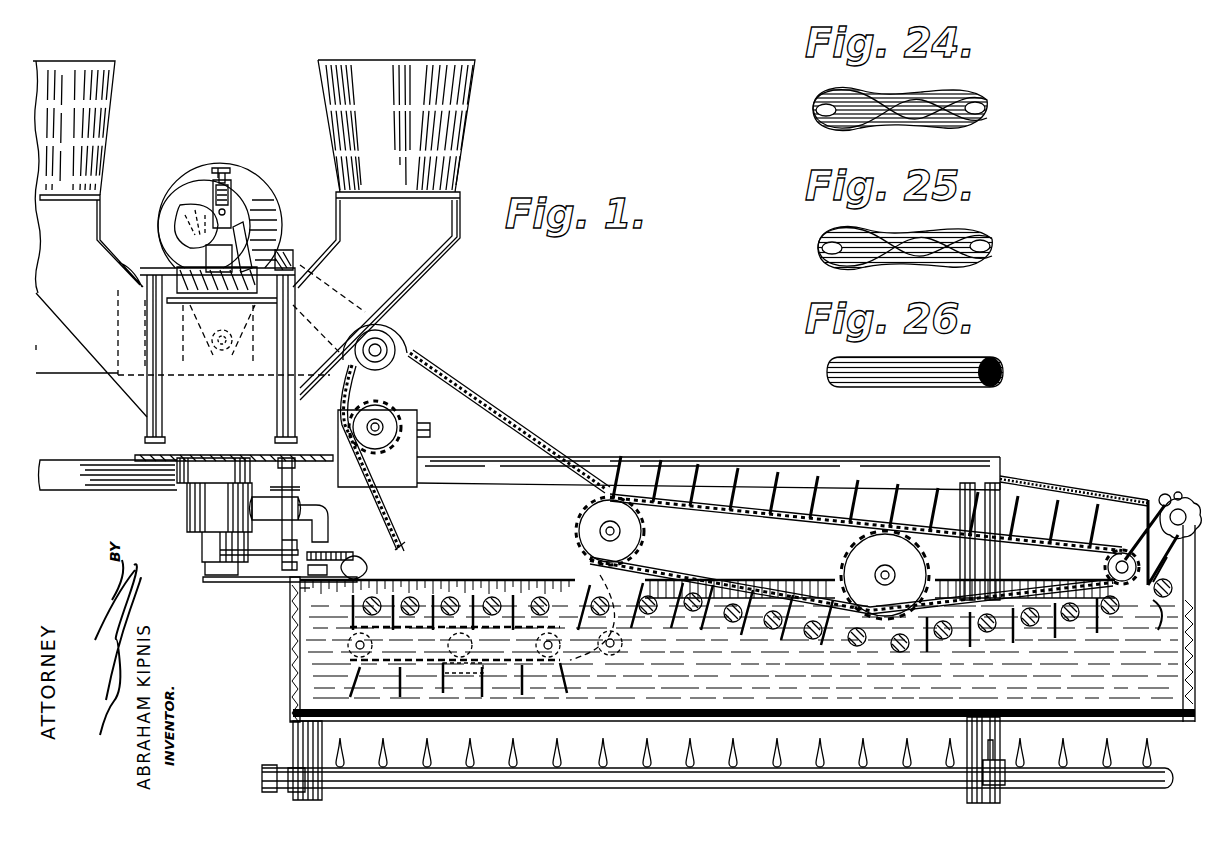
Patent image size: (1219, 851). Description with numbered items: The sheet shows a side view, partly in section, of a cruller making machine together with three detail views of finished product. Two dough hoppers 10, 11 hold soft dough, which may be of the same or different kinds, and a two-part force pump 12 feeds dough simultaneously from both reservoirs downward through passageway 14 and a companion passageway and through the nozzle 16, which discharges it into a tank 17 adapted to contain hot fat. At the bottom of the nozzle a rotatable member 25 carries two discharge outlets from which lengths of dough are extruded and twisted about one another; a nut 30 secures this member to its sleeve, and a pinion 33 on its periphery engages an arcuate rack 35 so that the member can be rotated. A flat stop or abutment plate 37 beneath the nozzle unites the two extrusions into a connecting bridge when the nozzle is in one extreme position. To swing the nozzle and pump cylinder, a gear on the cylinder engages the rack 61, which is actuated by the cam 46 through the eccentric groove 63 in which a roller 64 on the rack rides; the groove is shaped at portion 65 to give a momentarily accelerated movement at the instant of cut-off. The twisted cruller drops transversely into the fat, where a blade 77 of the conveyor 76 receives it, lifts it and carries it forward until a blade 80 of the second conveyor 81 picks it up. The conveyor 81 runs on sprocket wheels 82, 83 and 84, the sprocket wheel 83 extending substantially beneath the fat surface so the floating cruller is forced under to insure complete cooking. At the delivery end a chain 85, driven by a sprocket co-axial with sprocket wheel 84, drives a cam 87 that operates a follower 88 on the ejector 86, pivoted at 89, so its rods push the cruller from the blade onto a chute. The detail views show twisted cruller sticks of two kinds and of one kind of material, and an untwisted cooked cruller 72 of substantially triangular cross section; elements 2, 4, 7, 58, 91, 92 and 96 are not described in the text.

In FIG. 1, the section line 2- 2 is at (1203, 795).
In FIG. 1, the section line 4- 4 is at (218, 795).
In FIG. 1, the section line 7- 7 is at (448, 538).
In FIG. 1, the dough hopper 10 is at (97, 360).
In FIG. 1, the dough hopper 11 is at (400, 278).
In FIG. 1, the two-part force pump 12 is at (280, 182).
In FIG. 1, the passageway 14 is at (500, 740).
In FIG. 1, the nozzle 16 is at (245, 552).
In FIG. 1, the tank 17 is at (290, 642).
In FIG. 1, the rotatable member 25 is at (290, 590).
In FIG. 1, the nut 30 is at (334, 535).
In FIG. 1, the pinion 33 is at (340, 555).
In FIG. 1, the arcuate rack 35 is at (352, 566).
In FIG. 1, the stop or abutment plate 37 is at (400, 550).
In FIG. 1, the cam 46 is at (198, 166).
In FIG. 1, the adjusting bolt 58 is at (224, 172).
In FIG. 1, the rack 61 is at (276, 244).
In FIG. 1, the eccentric groove 63 is at (183, 182).
In FIG. 1, the roller 64 is at (238, 210).
In FIG. 1, the accelerated portion of cam groove 65 is at (162, 221).
In FIG. 26, the cruller 72 is at (898, 386).
In FIG. 1, the conveyor 76 is at (290, 612).
In FIG. 1, the blade 77 is at (400, 665).
In FIG. 1, the blade 80 is at (577, 525).
In FIG. 1, the second conveyor 81 is at (765, 482).
In FIG. 1, the sprocket wheel 82 is at (641, 531).
In FIG. 1, the sprocket wheel 83 is at (842, 558).
In FIG. 1, the sprocket wheel 84 is at (1104, 565).
In FIG. 1, the chain 85 is at (1140, 500).
In FIG. 1, the ejector 86 is at (1147, 497).
In FIG. 1, the cam 87 is at (1190, 518).
In FIG. 1, the follower 88 is at (1178, 492).
In FIG. 1, the pivot 89 is at (1165, 494).
In FIG. 1, the hopper wall 91 is at (48, 355).
In FIG. 1, the dough feed funnel 92 is at (228, 378).
In FIG. 1, the drive sprocket 96 is at (402, 410).